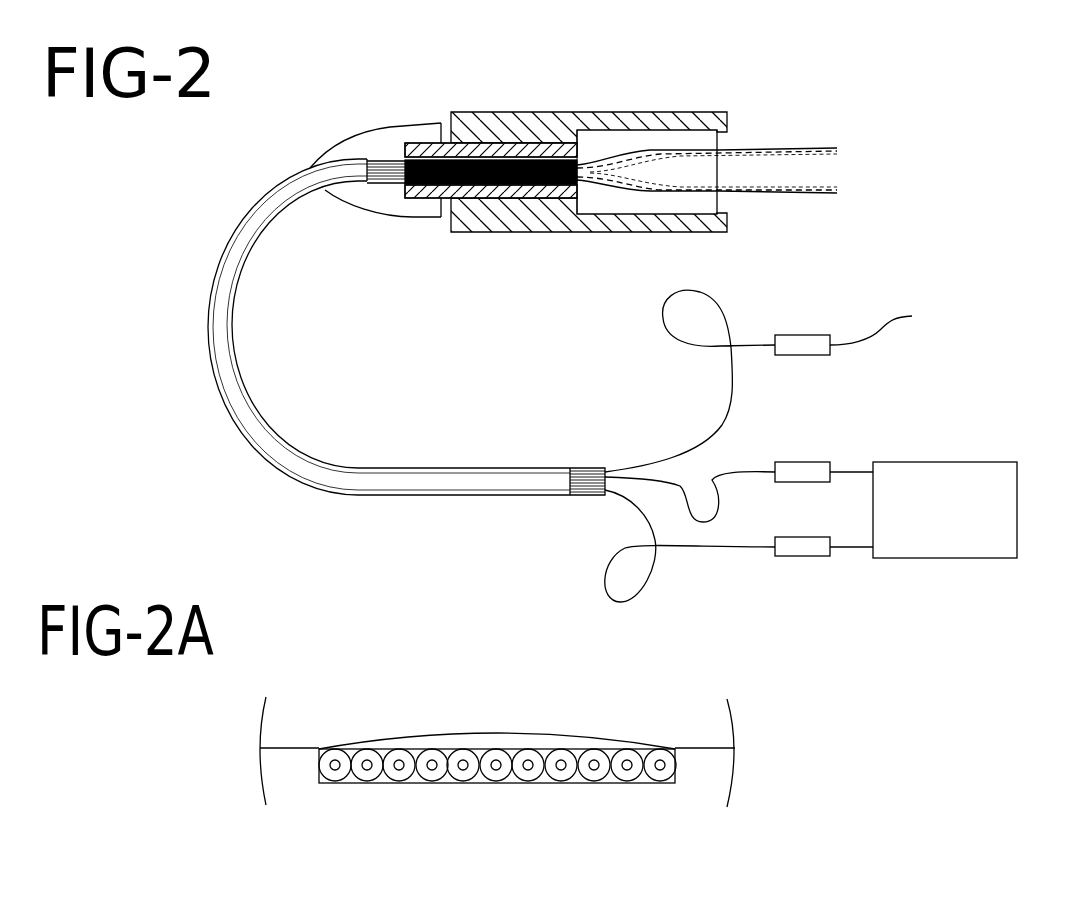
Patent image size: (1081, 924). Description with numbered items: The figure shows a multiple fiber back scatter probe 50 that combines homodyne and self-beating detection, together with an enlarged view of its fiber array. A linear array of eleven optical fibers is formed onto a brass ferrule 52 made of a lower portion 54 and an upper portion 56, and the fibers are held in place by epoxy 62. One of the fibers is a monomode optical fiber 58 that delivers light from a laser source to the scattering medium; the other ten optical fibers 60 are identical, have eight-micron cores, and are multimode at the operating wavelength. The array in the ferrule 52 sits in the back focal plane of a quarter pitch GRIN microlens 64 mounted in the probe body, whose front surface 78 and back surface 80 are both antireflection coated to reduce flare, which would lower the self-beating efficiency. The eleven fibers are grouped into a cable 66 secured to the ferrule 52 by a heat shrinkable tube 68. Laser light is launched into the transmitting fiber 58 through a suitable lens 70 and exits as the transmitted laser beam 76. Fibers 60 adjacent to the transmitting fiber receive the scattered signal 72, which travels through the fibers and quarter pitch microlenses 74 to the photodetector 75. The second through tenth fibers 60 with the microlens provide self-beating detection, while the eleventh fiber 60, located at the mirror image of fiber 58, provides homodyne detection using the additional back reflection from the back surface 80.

In FIG. 2, the multiple fiber back scatter probe 50 is at (633, 233).
In FIG. 2, the brass ferrule 52 is at (513, 196).
In FIG. 2A, the lower portion 54 is at (710, 763).
In FIG. 2A, the upper portion 56 is at (292, 737).
In FIG. 2A, the monomode optical fiber 58 is at (643, 785).
In FIG. 2A, the optical fibers 60 is at (390, 783).
In FIG. 2A, the epoxy 62 is at (493, 740).
In FIG. 2, the quarter pitch GRIN microlens 64 is at (657, 133).
In FIG. 2, the cable 66 is at (230, 250).
In FIG. 2, the heat shrinkable tube 68 is at (393, 135).
In FIG. 2, the lens 70 is at (777, 381).
In FIG. 2, the scattered signal 72 is at (820, 145).
In FIG. 2, the quarter pitch microlenses 74 is at (800, 462).
In FIG. 2, the photodetector 75 is at (997, 462).
In FIG. 2, the transmitted laser beam 76 is at (828, 158).
In FIG. 2, the front surface 78 is at (555, 113).
In FIG. 2, the back surface 80 is at (720, 143).